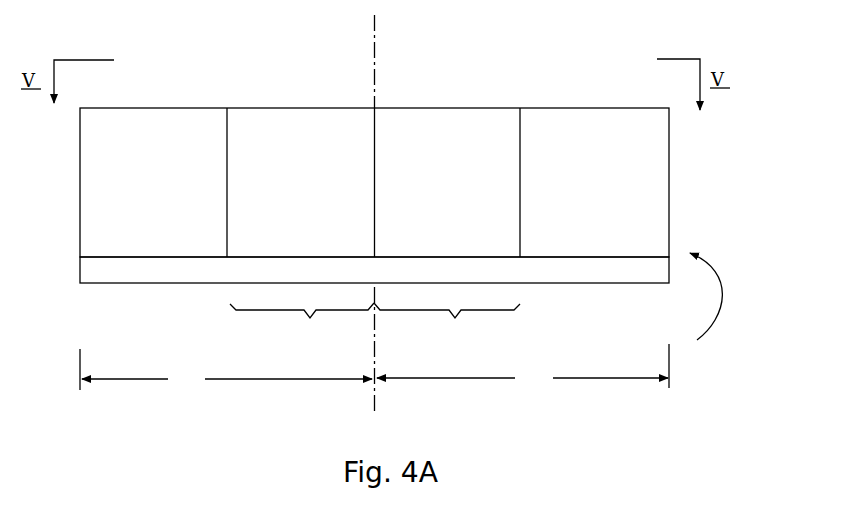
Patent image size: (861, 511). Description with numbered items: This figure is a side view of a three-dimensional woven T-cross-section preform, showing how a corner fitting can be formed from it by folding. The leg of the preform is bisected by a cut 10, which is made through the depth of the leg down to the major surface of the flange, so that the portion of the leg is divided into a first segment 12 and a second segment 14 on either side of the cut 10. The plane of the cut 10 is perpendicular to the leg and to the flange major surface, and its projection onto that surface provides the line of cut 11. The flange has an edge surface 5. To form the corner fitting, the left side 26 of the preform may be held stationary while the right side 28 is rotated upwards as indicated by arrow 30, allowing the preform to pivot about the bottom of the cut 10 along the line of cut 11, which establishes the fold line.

The edge surface 5 is at (105, 268).
The cut 10 is at (375, 145).
The line of cut 11 is at (375, 57).
The first segment 12 is at (302, 326).
The second segment 14 is at (447, 325).
The left side 26 is at (226, 370).
The right side 28 is at (523, 367).
The arrow 30 is at (724, 296).